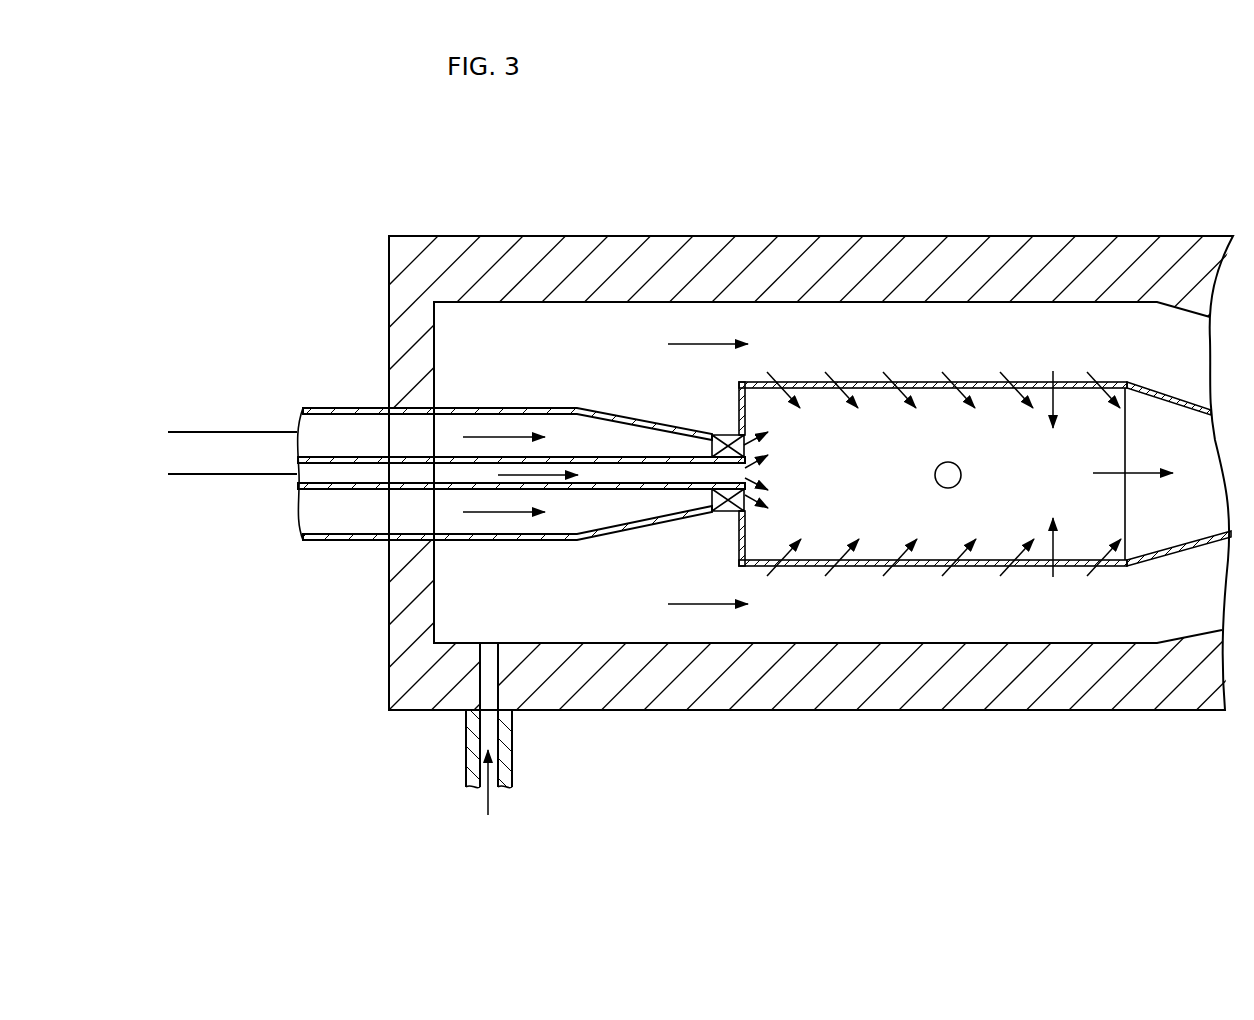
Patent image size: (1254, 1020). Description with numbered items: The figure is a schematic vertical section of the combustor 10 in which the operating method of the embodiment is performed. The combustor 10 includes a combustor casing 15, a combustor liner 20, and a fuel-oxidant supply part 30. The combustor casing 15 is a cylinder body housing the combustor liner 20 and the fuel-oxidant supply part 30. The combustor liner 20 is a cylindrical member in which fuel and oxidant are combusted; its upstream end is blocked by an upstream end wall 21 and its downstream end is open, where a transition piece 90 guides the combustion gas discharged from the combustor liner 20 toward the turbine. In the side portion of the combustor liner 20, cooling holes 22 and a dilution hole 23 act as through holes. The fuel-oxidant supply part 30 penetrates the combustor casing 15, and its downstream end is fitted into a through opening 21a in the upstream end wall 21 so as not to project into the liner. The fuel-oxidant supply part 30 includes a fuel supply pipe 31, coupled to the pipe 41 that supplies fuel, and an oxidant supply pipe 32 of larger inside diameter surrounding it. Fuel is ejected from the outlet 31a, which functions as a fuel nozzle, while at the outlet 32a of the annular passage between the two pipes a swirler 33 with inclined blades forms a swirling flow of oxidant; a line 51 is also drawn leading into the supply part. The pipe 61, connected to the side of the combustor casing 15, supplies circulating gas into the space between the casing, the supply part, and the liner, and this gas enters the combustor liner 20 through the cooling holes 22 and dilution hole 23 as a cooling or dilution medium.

The combustor 10 is at (897, 207).
The combustor casing 15 is at (624, 246).
The combustor liner 20 is at (862, 382).
The upstream end wall 21 is at (739, 396).
The through opening 21a is at (740, 520).
The cooling holes 22 is at (897, 568).
The dilution hole 23 is at (961, 475).
The fuel-oxidant supply part 30 is at (632, 548).
The fuel supply pipe 31 is at (350, 458).
The outlet of the fuel supply pipe 31a is at (748, 473).
The oxidant supply pipe 32 is at (336, 538).
The outlet of the annular passage 32a is at (748, 440).
The swirler 33 is at (730, 442).
The pipe 41 is at (198, 478).
The oxidant supply line 51 is at (198, 430).
The pipe 61 is at (474, 755).
The transition piece 90 is at (1176, 398).